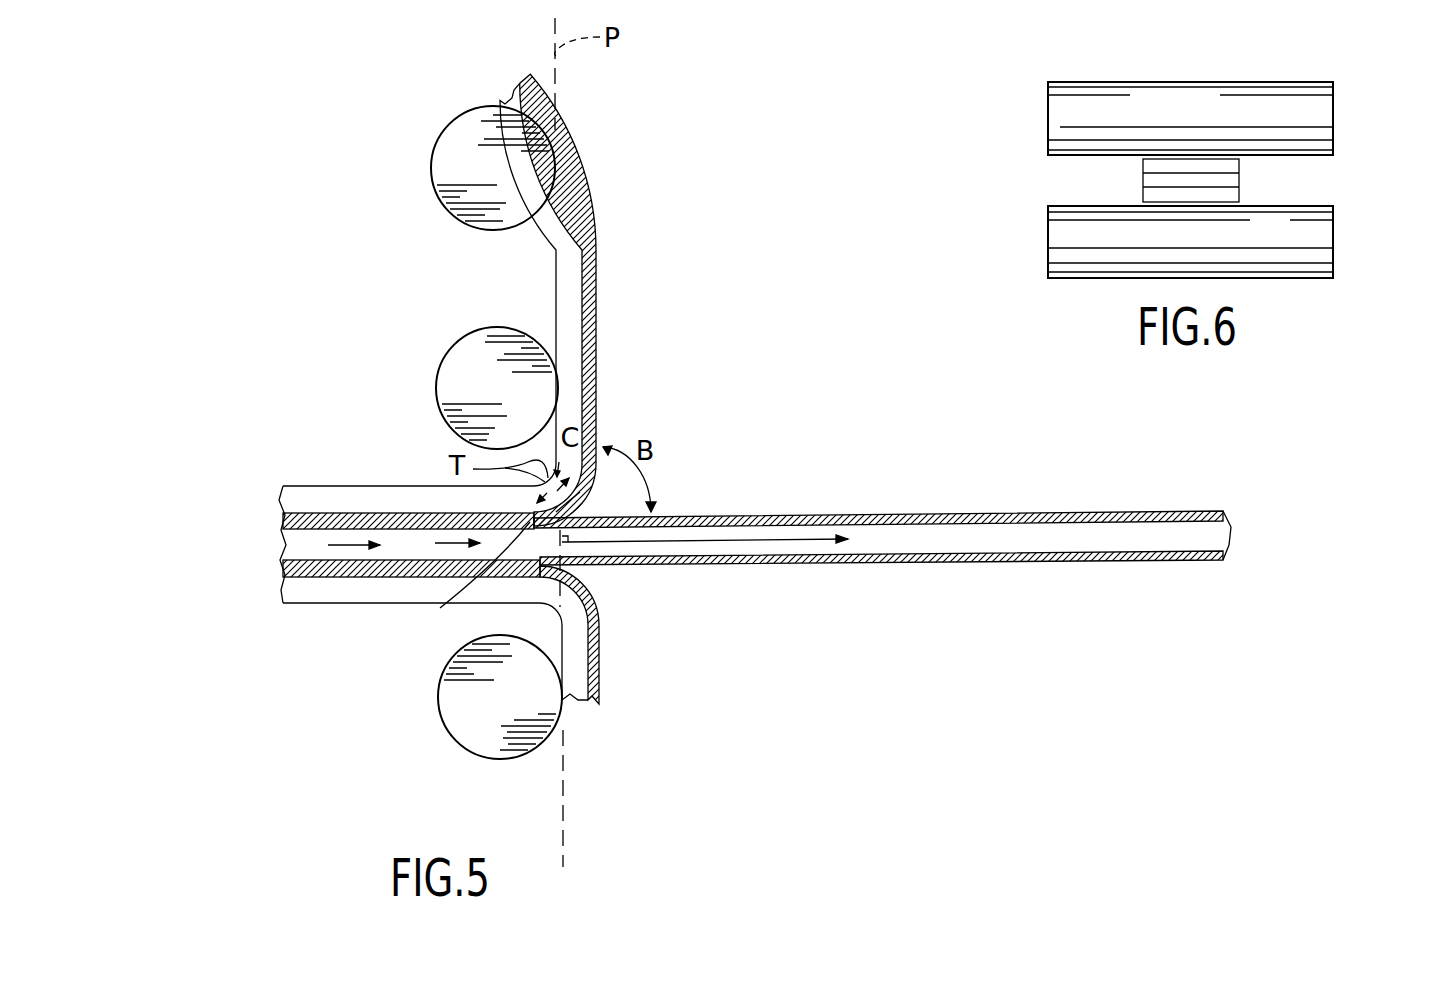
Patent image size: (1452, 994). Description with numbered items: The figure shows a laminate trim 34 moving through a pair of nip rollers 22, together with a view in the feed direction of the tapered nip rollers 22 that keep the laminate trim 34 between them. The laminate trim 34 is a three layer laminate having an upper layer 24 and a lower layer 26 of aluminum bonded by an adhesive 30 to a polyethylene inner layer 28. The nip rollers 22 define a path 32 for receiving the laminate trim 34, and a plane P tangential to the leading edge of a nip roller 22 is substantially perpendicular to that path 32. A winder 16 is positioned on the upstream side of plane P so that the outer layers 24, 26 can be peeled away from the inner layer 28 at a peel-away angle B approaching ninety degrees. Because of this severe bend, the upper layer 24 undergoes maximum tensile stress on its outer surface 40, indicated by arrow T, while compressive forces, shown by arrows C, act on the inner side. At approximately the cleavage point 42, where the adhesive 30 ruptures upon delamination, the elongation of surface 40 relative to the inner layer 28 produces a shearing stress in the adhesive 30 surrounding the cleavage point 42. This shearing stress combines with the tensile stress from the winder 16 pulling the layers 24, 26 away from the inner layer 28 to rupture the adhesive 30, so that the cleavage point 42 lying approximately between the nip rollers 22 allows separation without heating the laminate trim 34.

In FIG. 5, the winder 16 is at (440, 135).
In FIG. 5, the nip roller 22 is at (440, 346).
In FIG. 6, the nip roller 22 is at (1352, 112).
In FIG. 5, the upper layer 24 is at (283, 490).
In FIG. 5, the lower layer 26 is at (283, 593).
In FIG. 5, the inner layer 28 is at (283, 545).
In FIG. 5, the adhesive 30 is at (283, 517).
In FIG. 5, the path 32 is at (408, 540).
In FIG. 6, the laminate trim 34 is at (1143, 175).
In FIG. 5, the surface 40 is at (560, 510).
In FIG. 5, the cleavage point 42 is at (440, 608).